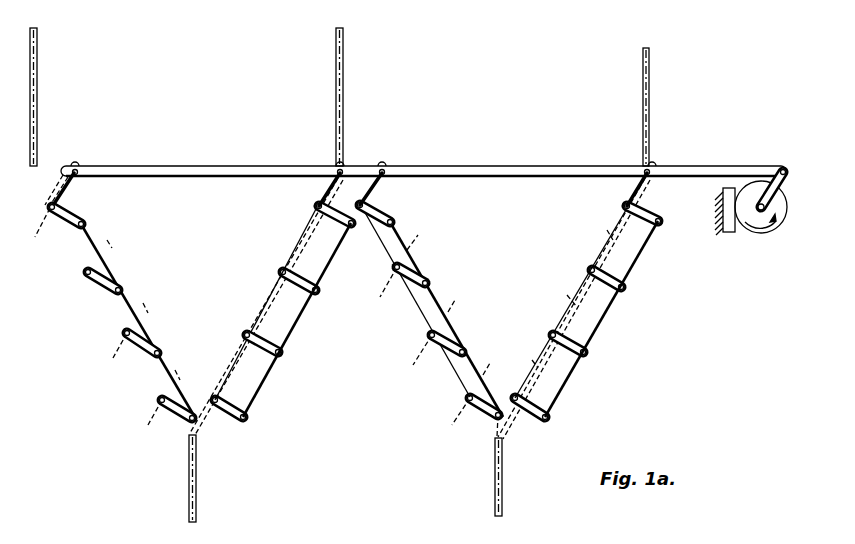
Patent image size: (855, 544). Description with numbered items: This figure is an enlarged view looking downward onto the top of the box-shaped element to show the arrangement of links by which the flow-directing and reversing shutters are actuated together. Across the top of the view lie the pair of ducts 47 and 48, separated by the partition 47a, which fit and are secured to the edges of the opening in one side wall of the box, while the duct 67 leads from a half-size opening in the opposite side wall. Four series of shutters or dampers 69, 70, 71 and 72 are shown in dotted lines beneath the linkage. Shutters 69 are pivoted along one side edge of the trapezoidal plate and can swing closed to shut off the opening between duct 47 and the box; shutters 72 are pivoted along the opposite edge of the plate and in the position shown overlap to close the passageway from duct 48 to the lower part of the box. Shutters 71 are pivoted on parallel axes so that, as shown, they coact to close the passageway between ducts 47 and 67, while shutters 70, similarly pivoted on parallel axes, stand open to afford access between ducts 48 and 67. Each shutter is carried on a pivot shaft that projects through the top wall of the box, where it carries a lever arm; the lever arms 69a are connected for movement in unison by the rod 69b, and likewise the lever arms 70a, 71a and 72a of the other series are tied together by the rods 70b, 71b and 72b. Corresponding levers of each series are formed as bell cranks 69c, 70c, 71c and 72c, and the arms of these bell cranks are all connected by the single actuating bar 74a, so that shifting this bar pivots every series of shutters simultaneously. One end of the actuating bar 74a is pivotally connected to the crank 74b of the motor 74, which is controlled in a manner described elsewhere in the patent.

The duct 47 is at (186, 87).
The partition 47a is at (344, 60).
The duct 48 is at (507, 99).
The duct 67 is at (314, 454).
The shutters 69 is at (88, 272).
The lever arm 69a is at (106, 280).
The rod 69b is at (142, 343).
The bell crank 69c is at (72, 216).
The shutters 70 is at (428, 345).
The lever arm 70a is at (411, 287).
The rod 70b is at (437, 297).
The bell crank 70c is at (370, 195).
The shutters 71 is at (278, 290).
The lever arm 71a is at (247, 335).
The rod 71b is at (292, 331).
The bell crank 71c is at (325, 193).
The shutters 72 is at (603, 247).
The lever arm 72a is at (578, 343).
The rod 72b is at (638, 258).
The bell crank 72c is at (650, 214).
The motor 74 is at (759, 233).
The actuating bar 74a is at (497, 152).
The crank 74b is at (775, 165).